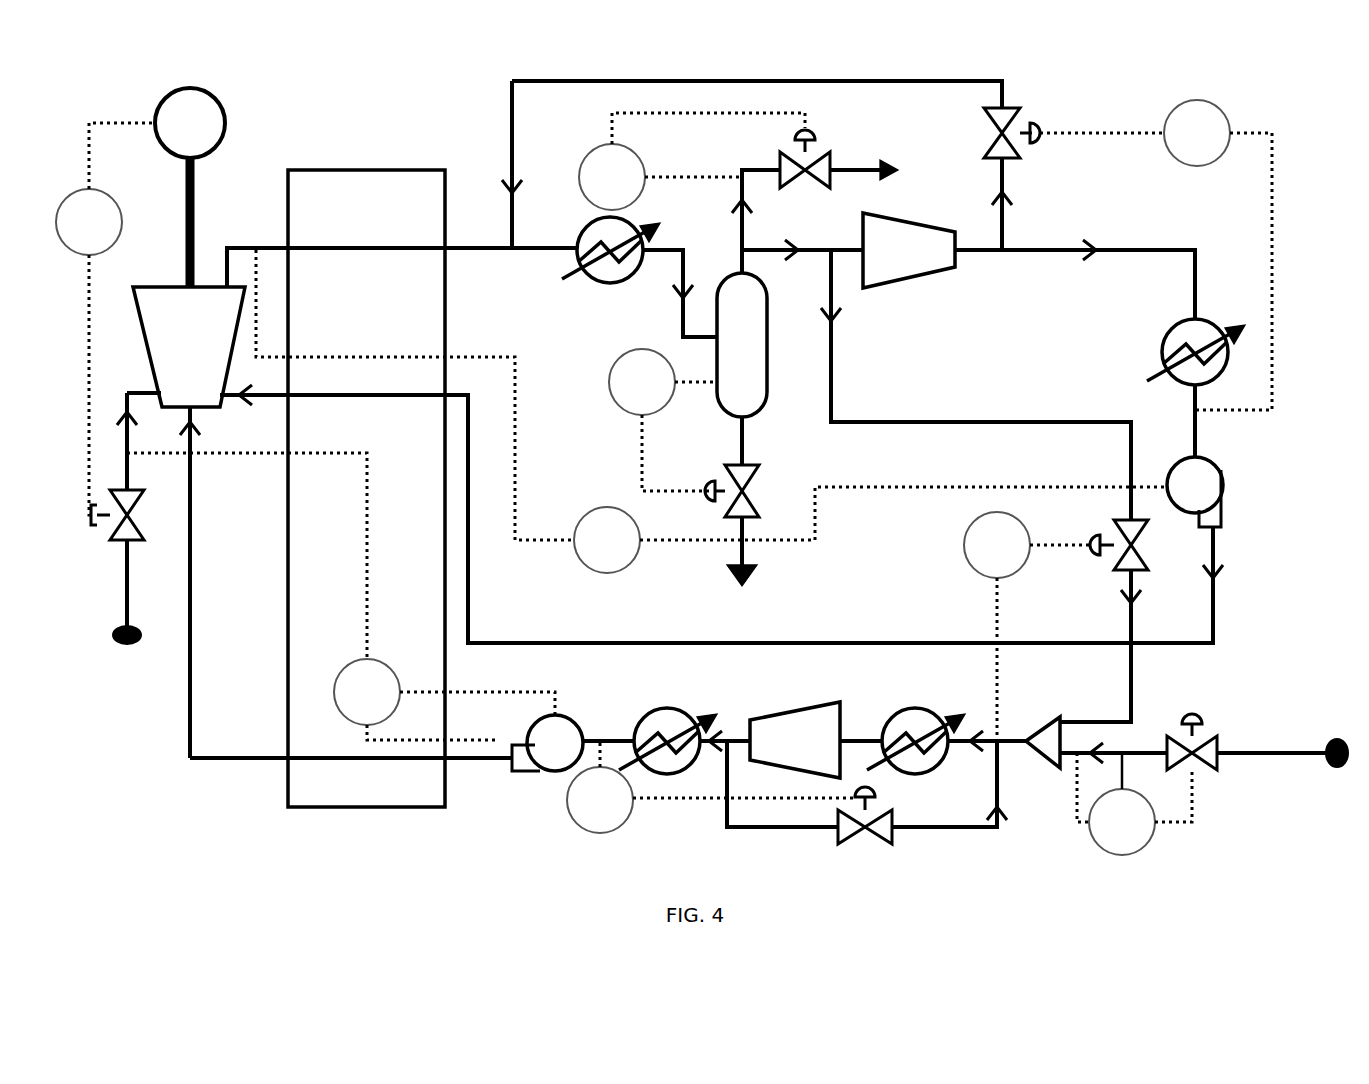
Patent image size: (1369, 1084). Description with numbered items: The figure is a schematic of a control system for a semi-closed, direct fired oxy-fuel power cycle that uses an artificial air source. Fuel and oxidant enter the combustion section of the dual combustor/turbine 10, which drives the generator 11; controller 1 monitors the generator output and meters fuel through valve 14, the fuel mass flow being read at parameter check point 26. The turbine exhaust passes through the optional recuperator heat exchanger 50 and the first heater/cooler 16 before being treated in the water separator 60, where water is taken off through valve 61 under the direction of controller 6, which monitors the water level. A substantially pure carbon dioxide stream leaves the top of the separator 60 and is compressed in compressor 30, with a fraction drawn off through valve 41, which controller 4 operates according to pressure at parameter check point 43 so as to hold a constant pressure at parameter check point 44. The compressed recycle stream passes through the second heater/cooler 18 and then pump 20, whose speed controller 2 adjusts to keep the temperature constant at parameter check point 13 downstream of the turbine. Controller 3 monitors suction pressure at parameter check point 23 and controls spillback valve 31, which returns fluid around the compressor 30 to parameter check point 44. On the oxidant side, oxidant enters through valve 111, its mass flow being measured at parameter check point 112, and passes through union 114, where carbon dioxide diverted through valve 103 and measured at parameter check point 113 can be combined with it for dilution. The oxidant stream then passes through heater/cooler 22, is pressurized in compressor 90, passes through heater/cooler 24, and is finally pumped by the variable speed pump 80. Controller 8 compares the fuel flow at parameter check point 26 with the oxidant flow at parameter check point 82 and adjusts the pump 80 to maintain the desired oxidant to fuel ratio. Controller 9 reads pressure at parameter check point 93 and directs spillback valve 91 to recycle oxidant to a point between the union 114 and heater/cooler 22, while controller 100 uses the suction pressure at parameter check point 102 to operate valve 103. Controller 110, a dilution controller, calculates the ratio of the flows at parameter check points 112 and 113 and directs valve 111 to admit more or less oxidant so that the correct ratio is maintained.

The controller 1 is at (105, 319).
The controller 2 is at (711, 411).
The controller 3 is at (1156, 255).
The controller 4 is at (692, 161).
The controller 6 is at (663, 420).
The controller 8 is at (341, 596).
The controller 9 is at (710, 787).
The dual combustor/turbine 10 is at (189, 347).
The generator 11 is at (190, 187).
The parameter check point 13 is at (402, 254).
The valve 14 is at (127, 515).
The first heater/cooler 16 is at (611, 264).
The second heater/cooler 18 is at (1192, 352).
The pump 20 is at (1195, 492).
The heater/cooler 22 is at (916, 727).
The parameter check point 23 is at (1176, 421).
The heater/cooler 24 is at (668, 727).
The parameter check point 26 is at (111, 441).
The compressor 30 is at (909, 250).
The spillback valve 31 is at (999, 133).
The valve 41 is at (839, 168).
The parameter check point 43 is at (752, 208).
The parameter check point 44 is at (528, 264).
The recuperator heat exchanger 50 is at (366, 488).
The water separator 60 is at (742, 345).
The valve 61 is at (744, 501).
The pump 80 is at (547, 743).
The parameter check point 82 is at (351, 772).
The compressor 90 is at (795, 740).
The spillback valve 91 is at (865, 825).
The parameter check point 93 is at (608, 727).
The controller 100 is at (1027, 626).
The parameter check point 102 is at (987, 759).
The valve 103 is at (1137, 545).
The controller 110 is at (1134, 804).
The valve 111 is at (1209, 739).
The parameter check point 112 is at (1113, 746).
The parameter check point 113 is at (1095, 709).
The union 114 is at (1039, 752).